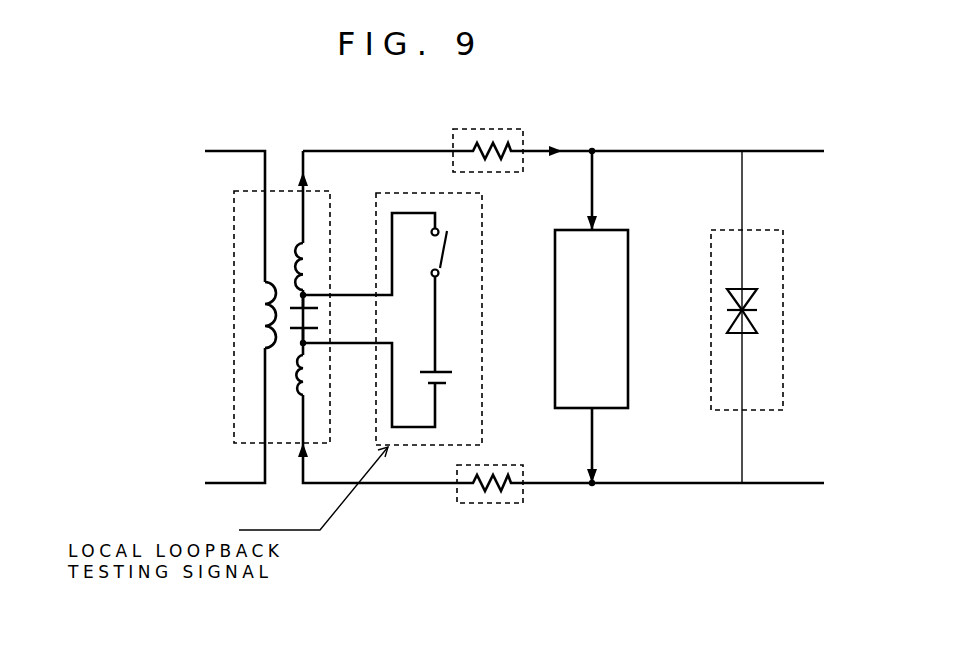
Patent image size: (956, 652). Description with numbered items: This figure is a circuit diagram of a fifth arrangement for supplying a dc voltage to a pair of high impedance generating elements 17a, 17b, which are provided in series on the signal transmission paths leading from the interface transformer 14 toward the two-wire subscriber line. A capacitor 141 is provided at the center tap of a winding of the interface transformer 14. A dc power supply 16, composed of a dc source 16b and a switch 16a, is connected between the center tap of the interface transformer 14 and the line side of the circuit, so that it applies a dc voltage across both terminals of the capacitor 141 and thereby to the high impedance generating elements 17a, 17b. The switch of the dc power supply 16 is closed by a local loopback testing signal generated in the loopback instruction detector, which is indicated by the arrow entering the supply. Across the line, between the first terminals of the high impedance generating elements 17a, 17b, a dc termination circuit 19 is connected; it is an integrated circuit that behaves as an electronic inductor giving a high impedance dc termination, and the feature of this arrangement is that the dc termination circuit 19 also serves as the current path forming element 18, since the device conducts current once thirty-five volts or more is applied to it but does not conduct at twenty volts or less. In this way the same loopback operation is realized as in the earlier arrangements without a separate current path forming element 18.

The interface transformer 14 is at (234, 300).
The capacitor 141 is at (346, 312).
The dc power supply 16 is at (482, 248).
The dc source 16a is at (430, 247).
The switch 16b is at (457, 382).
The high impedance generating element 17a is at (472, 129).
The high impedance generating element 17b is at (472, 504).
The current path forming element 18 is at (783, 243).
The dc termination circuit 19 is at (628, 268).